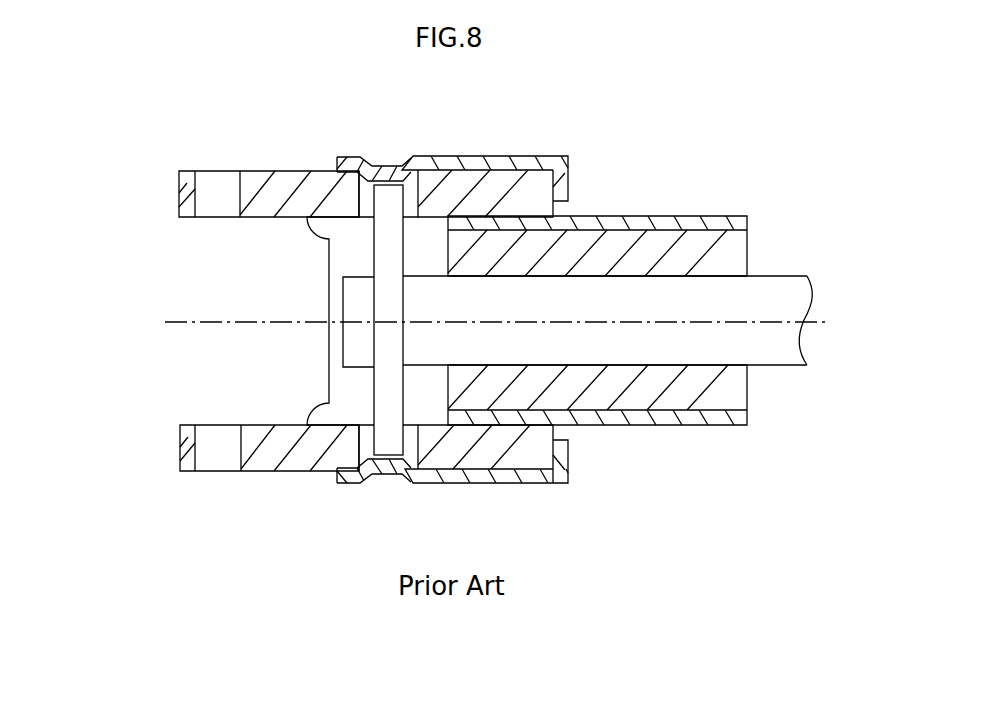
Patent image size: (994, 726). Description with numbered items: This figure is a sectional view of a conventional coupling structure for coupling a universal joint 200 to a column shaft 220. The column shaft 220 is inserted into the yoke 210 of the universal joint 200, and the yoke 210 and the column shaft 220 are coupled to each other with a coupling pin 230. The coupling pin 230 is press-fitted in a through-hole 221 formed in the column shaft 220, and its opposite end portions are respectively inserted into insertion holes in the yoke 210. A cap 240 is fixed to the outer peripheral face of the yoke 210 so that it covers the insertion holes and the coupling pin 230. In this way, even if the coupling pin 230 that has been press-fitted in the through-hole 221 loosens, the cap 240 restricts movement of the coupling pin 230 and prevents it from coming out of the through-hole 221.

The universal joint 200 is at (259, 139).
The yoke 210 is at (180, 193).
The column shaft 220 is at (778, 276).
The through-hole 221 is at (376, 343).
The coupling pin 230 is at (373, 243).
The cap 240 is at (494, 156).